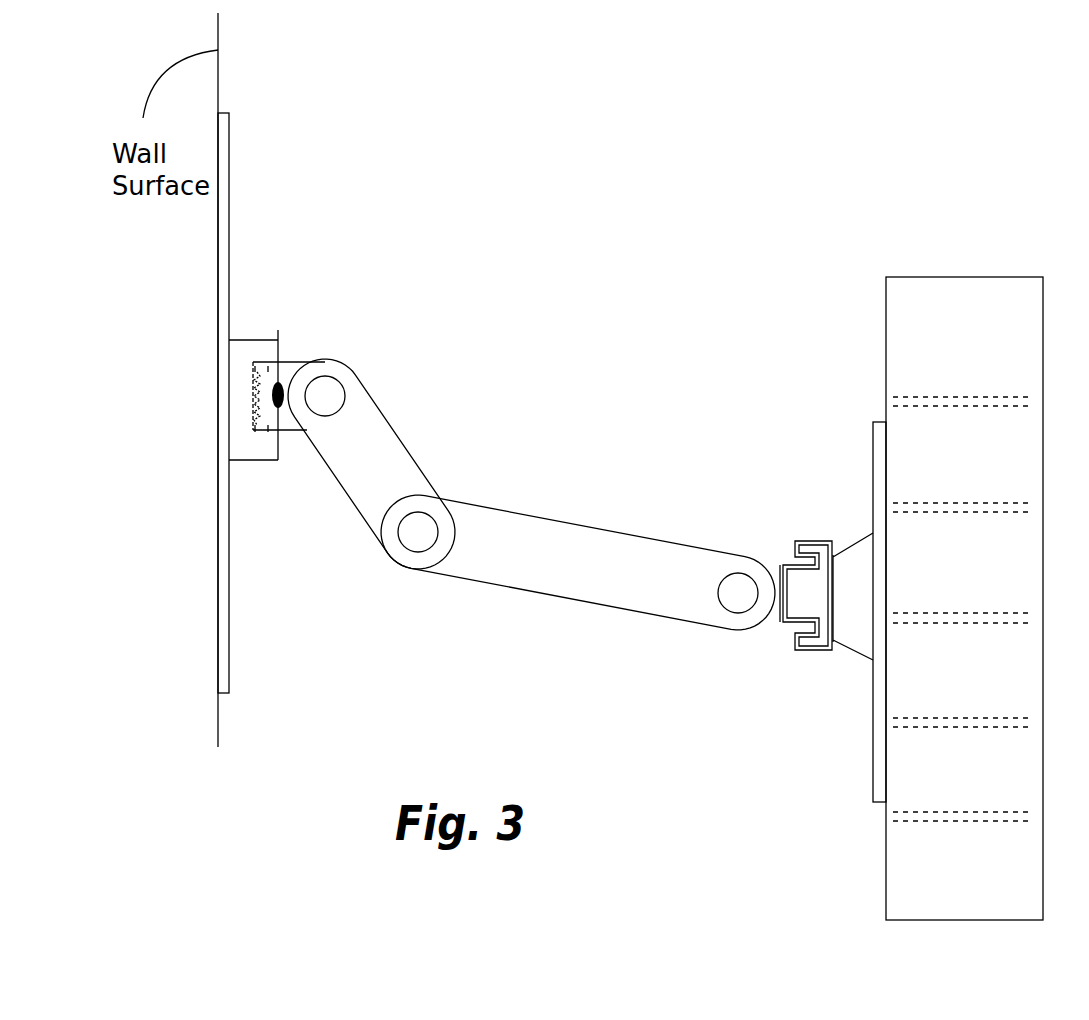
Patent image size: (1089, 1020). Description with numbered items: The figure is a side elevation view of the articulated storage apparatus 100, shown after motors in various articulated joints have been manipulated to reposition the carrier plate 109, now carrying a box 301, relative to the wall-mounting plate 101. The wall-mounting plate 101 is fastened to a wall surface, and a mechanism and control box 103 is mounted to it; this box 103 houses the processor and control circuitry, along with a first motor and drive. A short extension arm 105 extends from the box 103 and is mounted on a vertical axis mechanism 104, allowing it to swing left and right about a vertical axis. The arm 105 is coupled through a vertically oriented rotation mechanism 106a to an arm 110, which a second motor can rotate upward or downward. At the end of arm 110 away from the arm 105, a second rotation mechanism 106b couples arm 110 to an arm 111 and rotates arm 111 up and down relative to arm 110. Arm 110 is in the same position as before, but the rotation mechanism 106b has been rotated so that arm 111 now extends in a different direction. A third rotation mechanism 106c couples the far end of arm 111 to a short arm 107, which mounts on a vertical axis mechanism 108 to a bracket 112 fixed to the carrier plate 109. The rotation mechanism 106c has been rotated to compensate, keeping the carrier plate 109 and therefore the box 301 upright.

The articulated storage apparatus 100 is at (566, 168).
The wall-mounting plate 101 is at (227, 110).
The mechanism and control box 103 is at (248, 340).
The vertical axis mechanism 104 is at (265, 363).
The short extension arm 105 is at (295, 375).
The rotation mechanism 106a is at (331, 395).
The second rotation mechanism 106b is at (418, 531).
The third rotation mechanism 106c is at (737, 591).
The short arm 107 is at (779, 565).
The vertical axis mechanism 108 is at (800, 612).
The carrier plate 109 is at (873, 468).
The arm 110 is at (375, 440).
The arm 111 is at (520, 565).
The bracket 112 is at (866, 640).
The box 301 is at (928, 288).